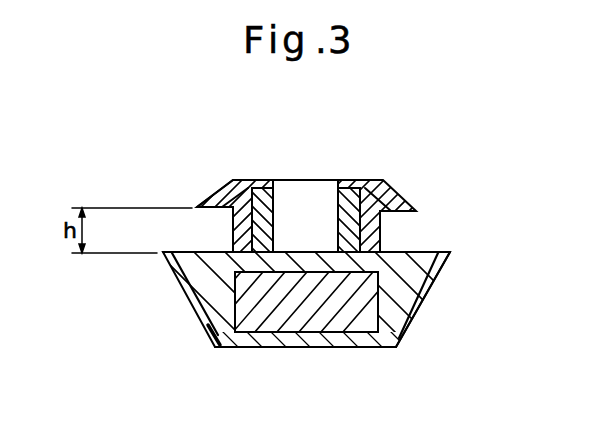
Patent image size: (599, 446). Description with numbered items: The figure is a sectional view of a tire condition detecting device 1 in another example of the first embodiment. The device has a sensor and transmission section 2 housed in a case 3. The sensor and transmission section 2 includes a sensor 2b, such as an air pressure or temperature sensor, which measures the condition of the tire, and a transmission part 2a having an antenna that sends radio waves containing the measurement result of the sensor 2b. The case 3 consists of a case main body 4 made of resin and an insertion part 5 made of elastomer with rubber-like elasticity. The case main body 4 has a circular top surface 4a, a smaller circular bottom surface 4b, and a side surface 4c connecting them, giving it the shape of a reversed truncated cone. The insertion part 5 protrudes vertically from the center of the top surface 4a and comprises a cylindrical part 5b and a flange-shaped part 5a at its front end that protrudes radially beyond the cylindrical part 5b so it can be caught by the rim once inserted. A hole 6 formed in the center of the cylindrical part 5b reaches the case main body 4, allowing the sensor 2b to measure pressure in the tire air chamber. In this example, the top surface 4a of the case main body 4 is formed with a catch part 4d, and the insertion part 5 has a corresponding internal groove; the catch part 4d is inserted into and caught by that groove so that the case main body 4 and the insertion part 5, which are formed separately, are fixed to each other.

The tire condition detecting device 1 is at (222, 178).
The sensor and transmission section 2 is at (380, 347).
The transmission part 2a is at (280, 302).
The sensor 2b is at (280, 302).
The case 3 is at (450, 254).
The case main body 4 is at (203, 303).
The top surface 4a is at (410, 252).
The bottom surface 4b is at (297, 347).
The side surface 4c is at (420, 303).
The catch part 4d is at (282, 192).
The insertion part 5 is at (233, 208).
The flange-shaped part 5a is at (222, 206).
The cylindrical part 5b is at (213, 333).
The hole 6 is at (342, 222).